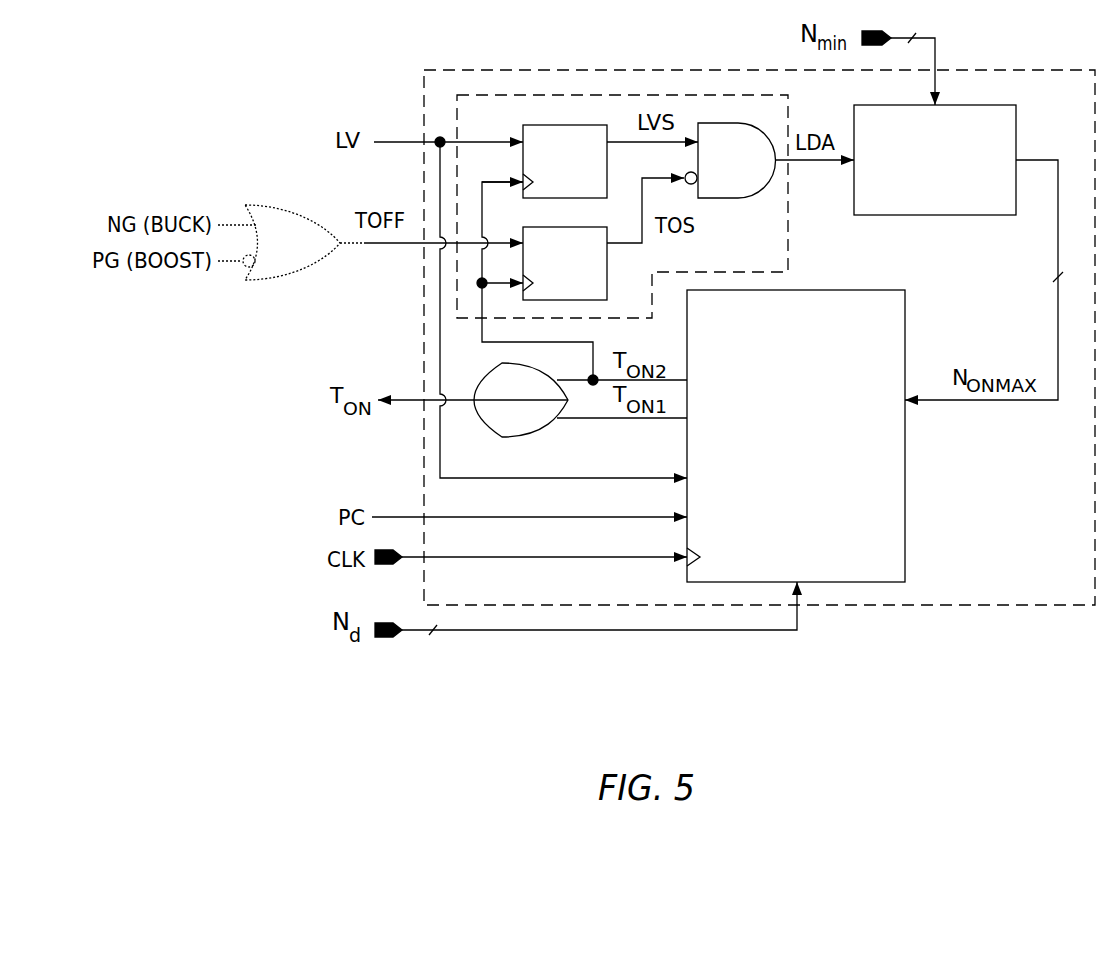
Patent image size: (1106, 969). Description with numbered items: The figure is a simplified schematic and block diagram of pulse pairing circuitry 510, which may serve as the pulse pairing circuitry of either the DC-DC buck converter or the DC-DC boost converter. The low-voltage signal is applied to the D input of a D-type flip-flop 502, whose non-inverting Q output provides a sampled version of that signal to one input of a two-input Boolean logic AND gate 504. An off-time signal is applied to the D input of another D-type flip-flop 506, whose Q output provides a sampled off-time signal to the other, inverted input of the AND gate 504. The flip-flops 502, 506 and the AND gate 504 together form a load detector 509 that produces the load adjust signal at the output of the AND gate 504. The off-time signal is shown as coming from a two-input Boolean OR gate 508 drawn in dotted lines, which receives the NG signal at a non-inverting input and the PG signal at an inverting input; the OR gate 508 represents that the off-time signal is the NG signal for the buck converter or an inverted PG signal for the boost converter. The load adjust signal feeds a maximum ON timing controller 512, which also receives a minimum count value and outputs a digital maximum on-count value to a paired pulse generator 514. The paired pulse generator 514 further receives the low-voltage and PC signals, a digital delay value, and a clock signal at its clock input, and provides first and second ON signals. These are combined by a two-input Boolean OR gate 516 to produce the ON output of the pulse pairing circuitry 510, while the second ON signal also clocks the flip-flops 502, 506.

The D-type flip-flop 502 is at (585, 187).
The AND gate 504 is at (747, 172).
The D-type flip-flop 506 is at (585, 281).
The OR gate 508 is at (312, 252).
The load detector 509 is at (763, 262).
The pulse pairing circuitry 510 is at (1062, 587).
The maximum ON timing controller 512 is at (952, 201).
The paired pulse generator 514 is at (812, 476).
The OR gate 516 is at (540, 406).